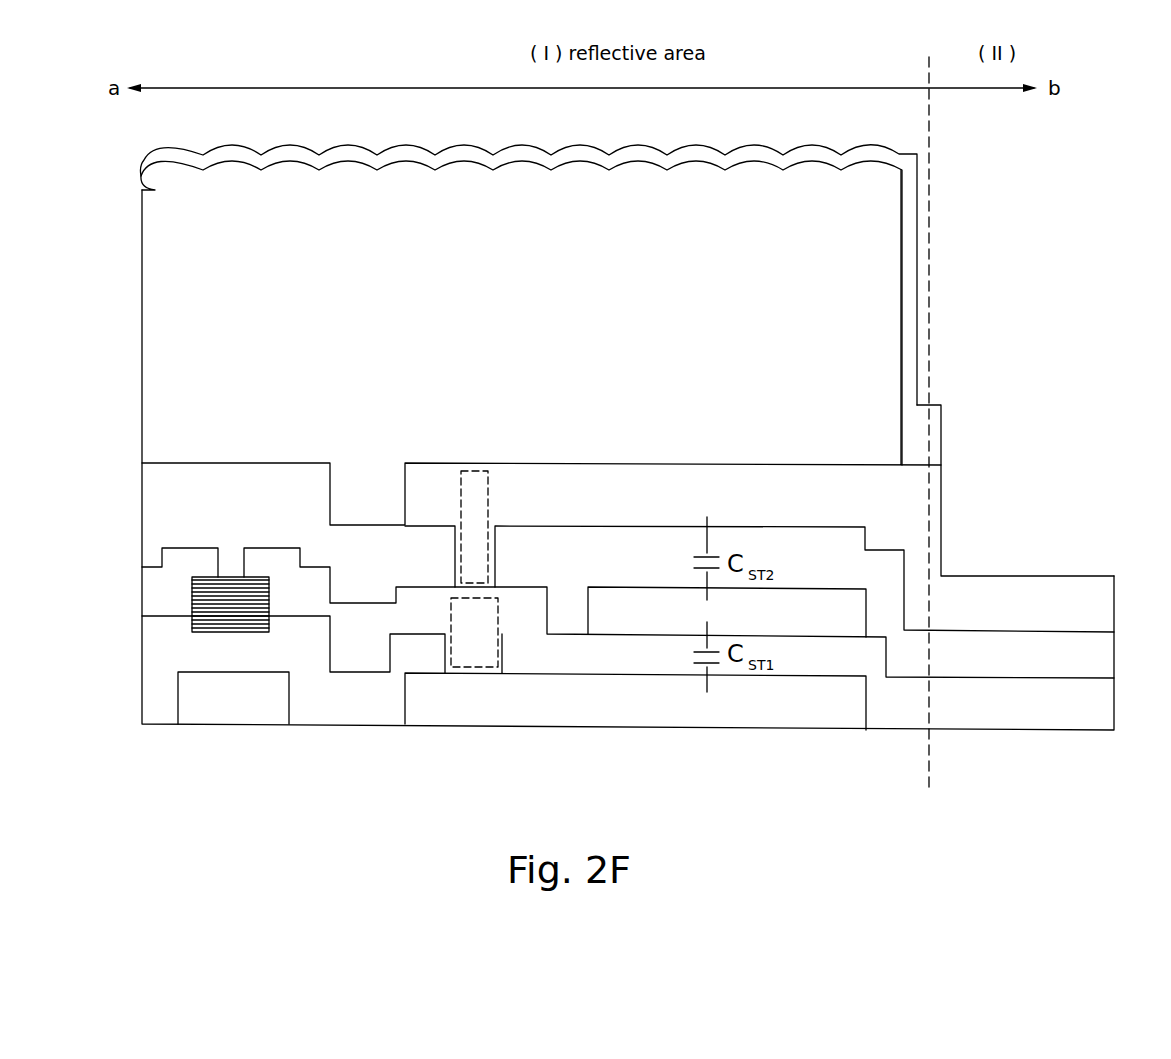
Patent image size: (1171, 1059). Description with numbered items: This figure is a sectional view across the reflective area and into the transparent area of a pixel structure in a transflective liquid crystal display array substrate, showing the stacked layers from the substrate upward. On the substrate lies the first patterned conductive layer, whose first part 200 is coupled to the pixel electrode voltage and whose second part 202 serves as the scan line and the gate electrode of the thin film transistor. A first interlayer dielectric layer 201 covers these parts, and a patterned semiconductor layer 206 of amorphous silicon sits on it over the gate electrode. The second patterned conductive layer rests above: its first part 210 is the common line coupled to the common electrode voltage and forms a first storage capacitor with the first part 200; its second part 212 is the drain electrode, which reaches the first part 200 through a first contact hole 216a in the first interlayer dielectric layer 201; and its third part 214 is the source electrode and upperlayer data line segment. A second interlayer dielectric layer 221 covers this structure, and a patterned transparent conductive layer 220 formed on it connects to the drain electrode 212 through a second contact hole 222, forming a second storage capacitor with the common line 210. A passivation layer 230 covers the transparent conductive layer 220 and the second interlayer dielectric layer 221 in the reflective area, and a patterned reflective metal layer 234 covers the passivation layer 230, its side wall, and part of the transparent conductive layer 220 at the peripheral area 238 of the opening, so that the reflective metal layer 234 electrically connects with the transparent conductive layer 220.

The first part of the first patterned conductive layer 200 is at (753, 715).
The first interlayer dielectric layer 201 is at (368, 710).
The second part of the first patterned conductive layer 202 is at (198, 712).
The patterned semiconductor layer 206 is at (243, 617).
The first part of the second patterned conductive layer 210 is at (638, 620).
The second part of the second patterned conductive layer 212 is at (310, 593).
The third part of the second patterned conductive layer 214 is at (152, 600).
The first contact hole 216a is at (472, 668).
The patterned transparent conductive layer 220 is at (657, 478).
The second interlayer dielectric layer 221 is at (152, 512).
The second contact hole 222 is at (478, 470).
The passivation layer 230 is at (525, 182).
The patterned reflective metal layer 234 is at (637, 152).
The peripheral area of the opening 238 is at (947, 398).